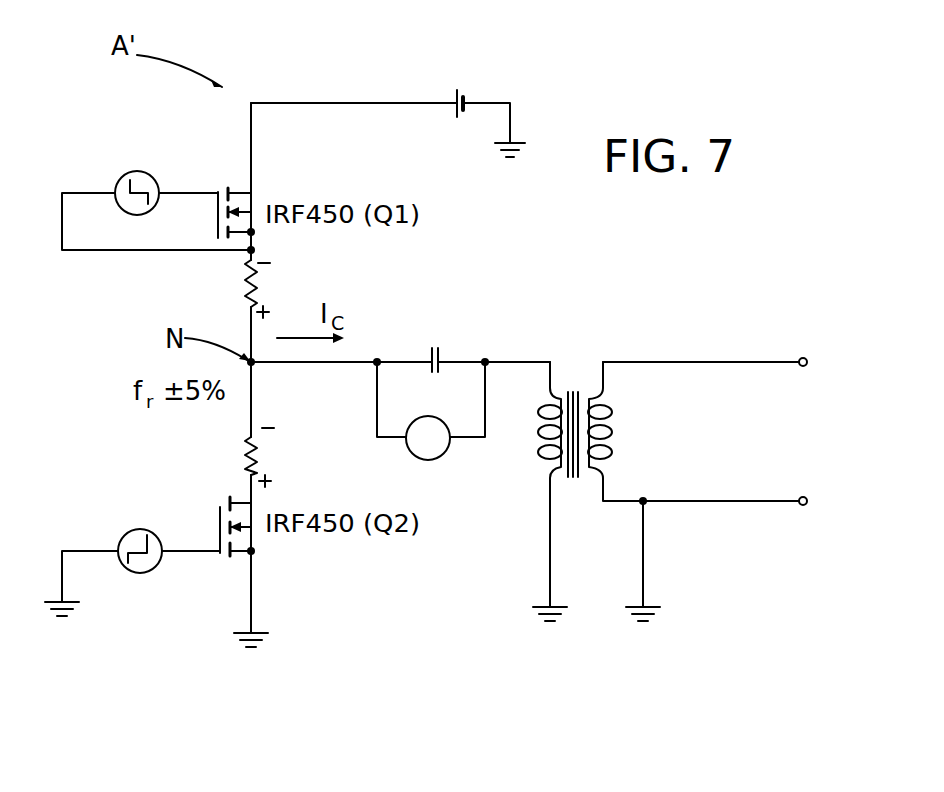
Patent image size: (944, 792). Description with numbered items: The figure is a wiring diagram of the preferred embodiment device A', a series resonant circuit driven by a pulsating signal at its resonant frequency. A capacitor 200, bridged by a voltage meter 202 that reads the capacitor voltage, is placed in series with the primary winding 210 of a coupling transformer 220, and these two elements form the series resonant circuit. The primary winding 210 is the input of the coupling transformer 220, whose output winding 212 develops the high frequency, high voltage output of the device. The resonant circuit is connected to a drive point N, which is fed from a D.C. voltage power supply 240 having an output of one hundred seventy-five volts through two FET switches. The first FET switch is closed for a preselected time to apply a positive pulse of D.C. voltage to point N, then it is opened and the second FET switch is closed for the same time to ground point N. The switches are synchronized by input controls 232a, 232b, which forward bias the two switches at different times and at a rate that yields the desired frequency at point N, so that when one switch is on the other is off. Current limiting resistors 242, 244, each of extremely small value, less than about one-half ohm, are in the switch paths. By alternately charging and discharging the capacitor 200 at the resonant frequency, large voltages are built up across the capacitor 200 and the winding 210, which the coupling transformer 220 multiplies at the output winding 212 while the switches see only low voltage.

The input control 232a is at (125, 172).
The input control 232b is at (140, 573).
The D.C. voltage power supply 240 is at (458, 118).
The current limiting resistor 242 is at (255, 288).
The current limiting resistor 244 is at (253, 452).
The capacitor 200 is at (443, 355).
The voltage meter 202 is at (447, 450).
The coupling transformer 220 is at (650, 451).
The primary winding 210 is at (549, 453).
The output winding 212 is at (605, 410).